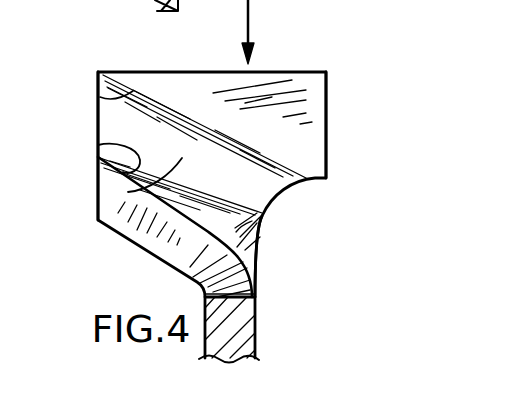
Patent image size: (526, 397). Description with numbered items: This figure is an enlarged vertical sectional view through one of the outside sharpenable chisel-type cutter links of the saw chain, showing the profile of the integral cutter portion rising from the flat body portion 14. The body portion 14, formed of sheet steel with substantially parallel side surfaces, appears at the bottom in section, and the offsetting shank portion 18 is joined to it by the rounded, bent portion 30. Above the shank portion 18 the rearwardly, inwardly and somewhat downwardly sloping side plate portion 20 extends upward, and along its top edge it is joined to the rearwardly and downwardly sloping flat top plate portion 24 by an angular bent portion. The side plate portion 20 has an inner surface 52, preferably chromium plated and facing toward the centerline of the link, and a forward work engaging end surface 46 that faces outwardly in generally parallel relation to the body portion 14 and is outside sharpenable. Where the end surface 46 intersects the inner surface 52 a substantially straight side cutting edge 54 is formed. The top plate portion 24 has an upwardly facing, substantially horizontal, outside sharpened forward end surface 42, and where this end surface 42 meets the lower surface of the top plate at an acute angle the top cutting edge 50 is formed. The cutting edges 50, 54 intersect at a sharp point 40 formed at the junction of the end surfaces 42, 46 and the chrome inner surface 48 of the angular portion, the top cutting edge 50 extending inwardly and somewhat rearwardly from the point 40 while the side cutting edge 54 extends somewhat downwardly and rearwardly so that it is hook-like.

The body portion 14 is at (257, 333).
The shank portion 18 is at (262, 216).
The side plate portion 20 is at (98, 145).
The top plate portion 24 is at (224, 81).
The rounded bent portion 30 is at (257, 257).
The sharp point 40 is at (97, 72).
The forward work engaging end surface of top plate portion 42 is at (155, 71).
The forward work engaging end surface of side plate portion 46 is at (97, 119).
The inner surface of angular portion 48 is at (100, 97).
The top cutting edge 50 is at (270, 71).
The inner surface of side plate portion 52 is at (128, 192).
The side cutting edge 54 is at (100, 155).